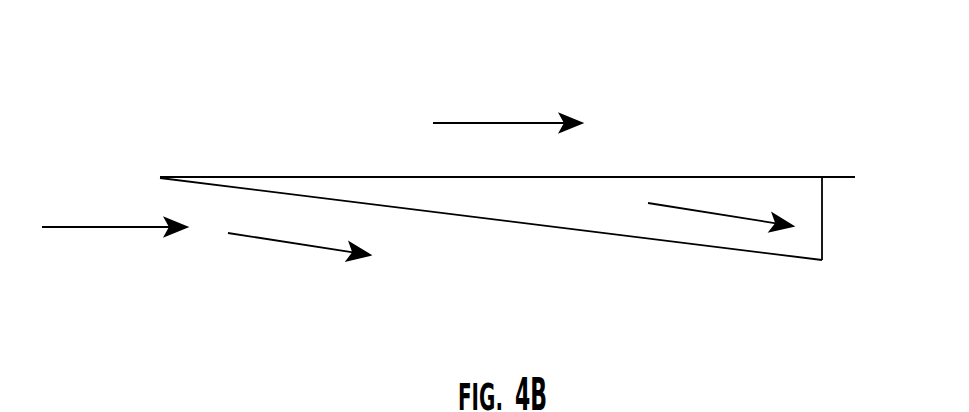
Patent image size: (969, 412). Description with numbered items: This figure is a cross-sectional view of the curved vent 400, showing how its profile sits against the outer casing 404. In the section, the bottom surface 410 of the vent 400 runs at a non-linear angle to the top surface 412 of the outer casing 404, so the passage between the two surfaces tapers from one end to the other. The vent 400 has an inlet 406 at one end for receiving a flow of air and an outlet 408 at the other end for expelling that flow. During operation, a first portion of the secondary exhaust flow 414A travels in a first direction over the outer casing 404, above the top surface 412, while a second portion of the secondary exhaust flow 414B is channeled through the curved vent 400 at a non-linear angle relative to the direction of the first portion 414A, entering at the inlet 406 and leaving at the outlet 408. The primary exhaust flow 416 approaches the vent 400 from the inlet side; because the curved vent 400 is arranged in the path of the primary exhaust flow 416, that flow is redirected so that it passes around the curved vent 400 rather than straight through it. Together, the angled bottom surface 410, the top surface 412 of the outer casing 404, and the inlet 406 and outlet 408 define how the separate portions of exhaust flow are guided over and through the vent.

The curved vent 400 is at (532, 218).
The outer casing 404 is at (793, 177).
The inlet 406 is at (277, 175).
The outlet 408 is at (822, 224).
The bottom surface 410 is at (643, 238).
The top surface 412 is at (700, 177).
The first portion of the secondary exhaust flow 414A is at (492, 122).
The second portion of the secondary exhaust flow 414B is at (758, 223).
The primary exhaust flow 416 is at (258, 242).